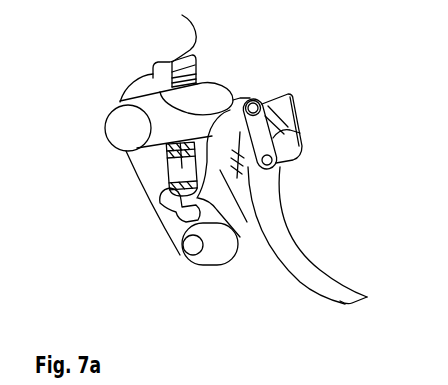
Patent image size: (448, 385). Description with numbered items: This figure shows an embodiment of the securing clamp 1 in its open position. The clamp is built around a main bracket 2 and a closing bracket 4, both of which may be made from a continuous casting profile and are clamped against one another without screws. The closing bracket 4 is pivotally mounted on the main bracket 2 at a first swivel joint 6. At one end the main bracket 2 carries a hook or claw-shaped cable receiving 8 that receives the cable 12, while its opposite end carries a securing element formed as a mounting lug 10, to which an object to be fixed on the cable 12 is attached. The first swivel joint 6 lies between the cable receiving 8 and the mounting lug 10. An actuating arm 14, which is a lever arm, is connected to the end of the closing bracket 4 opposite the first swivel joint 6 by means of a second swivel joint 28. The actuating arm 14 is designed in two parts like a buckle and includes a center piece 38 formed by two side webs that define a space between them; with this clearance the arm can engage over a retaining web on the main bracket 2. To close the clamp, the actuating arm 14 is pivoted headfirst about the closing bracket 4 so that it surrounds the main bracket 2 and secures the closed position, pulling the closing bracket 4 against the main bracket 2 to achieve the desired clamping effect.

The securing clamp 1 is at (297, 32).
The main bracket 2 is at (145, 173).
The closing bracket 4 is at (232, 170).
The first swivel joint 6 is at (163, 203).
The cable receiving 8 is at (200, 108).
The mounting lug 10 is at (193, 253).
The cable 12 is at (131, 135).
The actuating arm 14 is at (293, 252).
The second swivel joint 28 is at (255, 103).
The center piece 38 is at (288, 122).